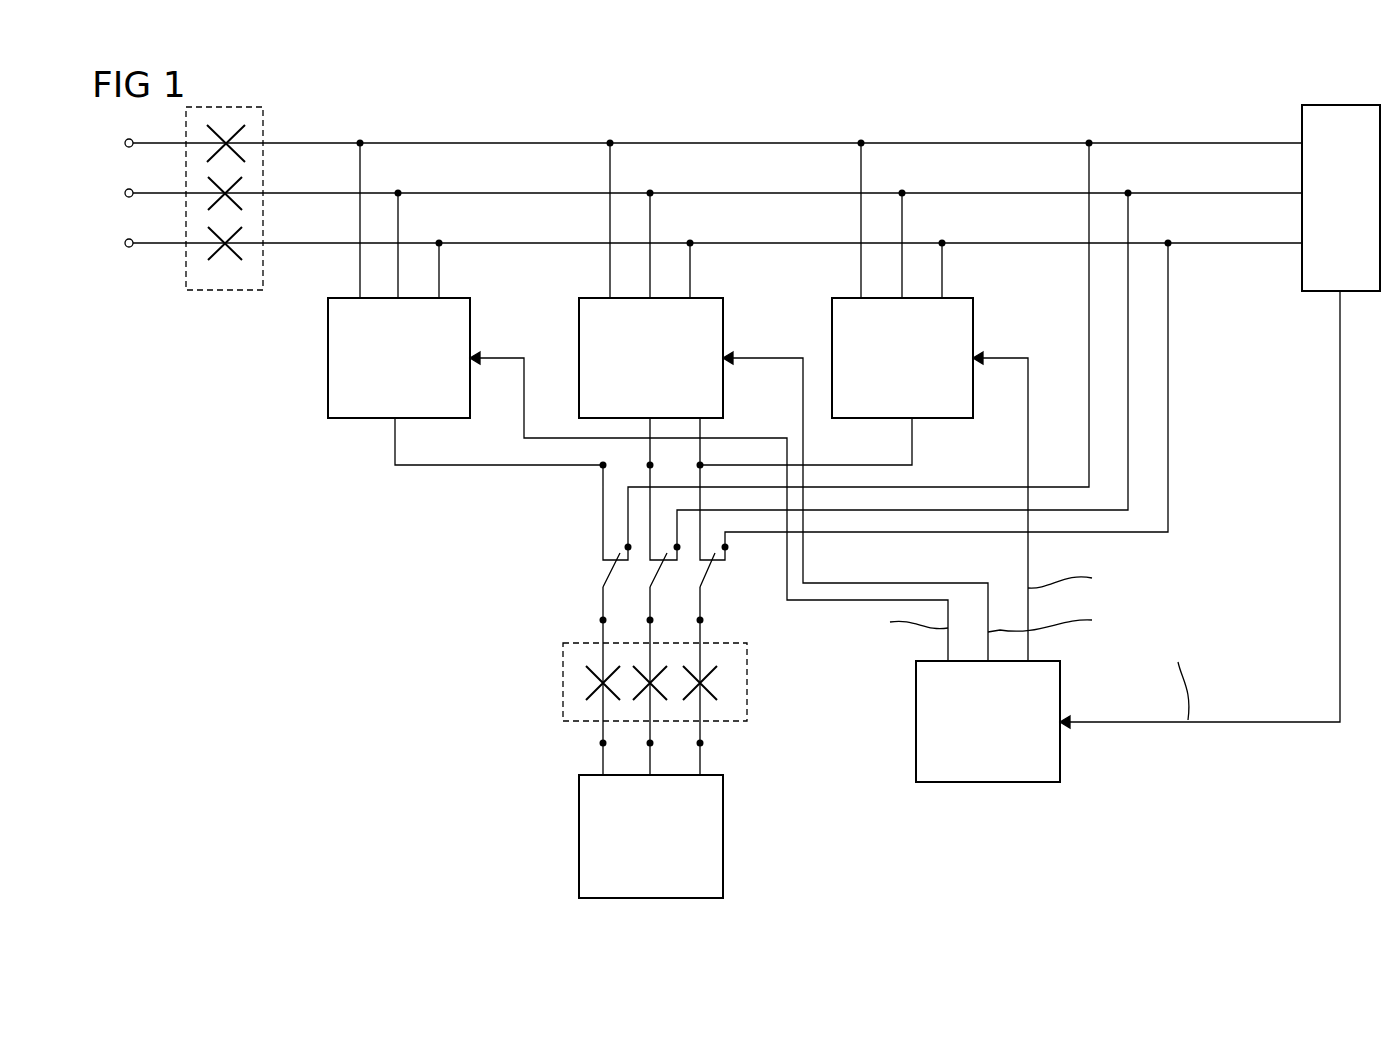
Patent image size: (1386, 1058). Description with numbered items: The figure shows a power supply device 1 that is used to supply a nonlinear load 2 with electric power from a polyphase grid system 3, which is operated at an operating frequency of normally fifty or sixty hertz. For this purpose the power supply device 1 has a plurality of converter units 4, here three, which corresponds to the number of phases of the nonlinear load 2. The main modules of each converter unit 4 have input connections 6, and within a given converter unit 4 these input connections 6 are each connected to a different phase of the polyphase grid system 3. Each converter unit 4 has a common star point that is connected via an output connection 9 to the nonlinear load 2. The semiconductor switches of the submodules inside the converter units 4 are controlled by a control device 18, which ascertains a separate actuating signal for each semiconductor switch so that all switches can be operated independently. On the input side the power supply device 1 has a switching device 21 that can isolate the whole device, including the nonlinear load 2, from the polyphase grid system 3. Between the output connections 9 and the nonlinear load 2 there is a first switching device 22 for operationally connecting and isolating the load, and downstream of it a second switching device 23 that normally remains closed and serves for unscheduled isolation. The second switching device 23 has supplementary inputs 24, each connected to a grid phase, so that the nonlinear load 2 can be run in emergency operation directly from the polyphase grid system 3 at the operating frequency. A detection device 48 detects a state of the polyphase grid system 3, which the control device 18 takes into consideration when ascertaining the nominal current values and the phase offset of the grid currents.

The power supply device 1 is at (250, 580).
The nonlinear load 2 is at (579, 833).
The polyphase grid system 3 is at (300, 125).
The converter unit 4 is at (328, 352).
The input connection 6 is at (398, 296).
The output connection 9 is at (648, 470).
The control device 18 is at (916, 720).
The switching device 21 is at (186, 272).
The first switching device 22 is at (563, 678).
The second switching device 23 is at (616, 564).
The supplementary input 24 is at (676, 546).
The detection device 48 is at (1302, 272).